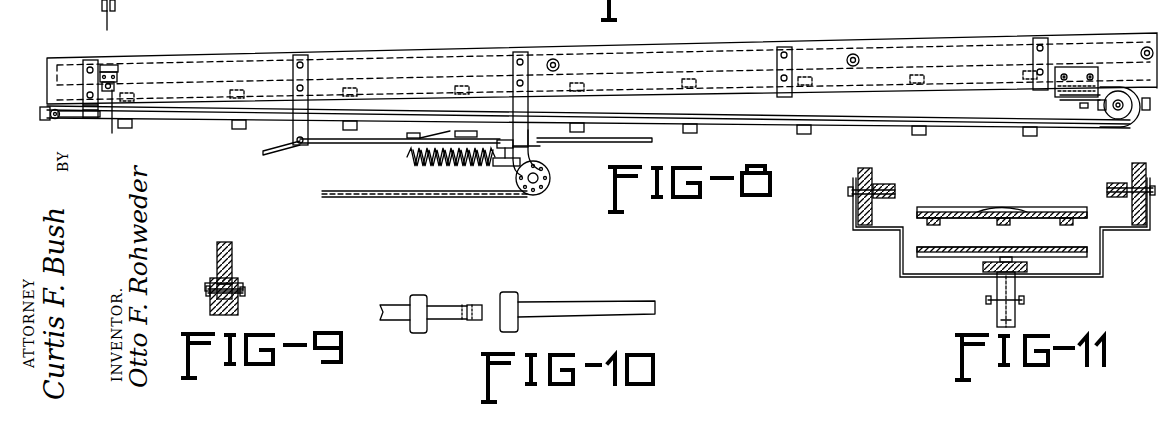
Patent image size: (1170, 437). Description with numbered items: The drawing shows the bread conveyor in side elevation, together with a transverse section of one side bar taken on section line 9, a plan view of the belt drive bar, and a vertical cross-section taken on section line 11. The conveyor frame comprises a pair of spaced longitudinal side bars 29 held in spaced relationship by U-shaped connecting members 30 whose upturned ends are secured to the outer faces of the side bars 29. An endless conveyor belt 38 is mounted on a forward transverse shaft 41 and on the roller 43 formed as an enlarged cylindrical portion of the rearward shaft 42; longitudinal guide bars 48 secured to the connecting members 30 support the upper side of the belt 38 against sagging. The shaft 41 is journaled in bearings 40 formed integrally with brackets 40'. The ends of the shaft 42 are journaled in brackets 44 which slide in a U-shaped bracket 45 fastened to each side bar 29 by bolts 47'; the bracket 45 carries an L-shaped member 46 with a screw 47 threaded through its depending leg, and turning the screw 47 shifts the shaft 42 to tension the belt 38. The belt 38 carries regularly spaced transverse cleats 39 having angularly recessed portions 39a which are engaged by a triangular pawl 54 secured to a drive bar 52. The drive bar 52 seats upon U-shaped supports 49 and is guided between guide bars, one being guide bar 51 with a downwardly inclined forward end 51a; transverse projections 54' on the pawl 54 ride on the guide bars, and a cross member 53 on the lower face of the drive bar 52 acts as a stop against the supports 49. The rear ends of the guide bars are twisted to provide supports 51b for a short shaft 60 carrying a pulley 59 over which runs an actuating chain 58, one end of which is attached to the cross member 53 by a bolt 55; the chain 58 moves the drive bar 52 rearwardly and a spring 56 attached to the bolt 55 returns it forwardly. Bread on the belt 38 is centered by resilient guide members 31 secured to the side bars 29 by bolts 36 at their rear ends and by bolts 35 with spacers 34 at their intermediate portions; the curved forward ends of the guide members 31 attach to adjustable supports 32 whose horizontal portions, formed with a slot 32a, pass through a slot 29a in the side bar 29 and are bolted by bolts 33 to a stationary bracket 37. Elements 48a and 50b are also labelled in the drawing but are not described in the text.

In FIG. 8, the section line 9— 9 is at (1063, 100).
In FIG. 8, the section line 11— 11 is at (554, 227).
In FIG. 8, the side bar 29 is at (382, 70).
In FIG. 9, the side bar 29 is at (232, 250).
In FIG. 11, the side bar 29 is at (872, 172).
In FIG. 8, the slot 29a is at (119, 74).
In FIG. 8, the U-shaped connecting member 30 is at (87, 80).
In FIG. 11, the U-shaped connecting member 30 is at (853, 210).
In FIG. 8, the guide member 31 is at (427, 68).
In FIG. 11, the guide member 31 is at (895, 198).
In FIG. 8, the adjustable support 32 is at (120, 72).
In FIG. 8, the slot 32a is at (120, 15).
In FIG. 8, the bolt 33 is at (110, 66).
In FIG. 11, the spacer 34 is at (890, 187).
In FIG. 8, the bolt 35 is at (560, 66).
In FIG. 8, the bolt 36 is at (1145, 47).
In FIG. 8, the stationary bracket 37 is at (119, 122).
In FIG. 8, the conveyor belt 38 is at (197, 122).
In FIG. 11, the conveyor belt 38 is at (950, 207).
In FIG. 8, the cleat 39 is at (693, 78).
In FIG. 11, the cleat 39 is at (1040, 207).
In FIG. 8, the angularly recessed portion 39a is at (685, 128).
In FIG. 11, the angularly recessed portion 39a is at (995, 207).
In FIG. 8, the journal or bearing 40 is at (43, 138).
In FIG. 8, the bracket 40' is at (79, 133).
In FIG. 8, the forward transverse shaft 41 is at (43, 115).
In FIG. 8, the rearward transverse shaft 42 is at (1145, 110).
In FIG. 8, the roller 43 is at (1127, 119).
In FIG. 8, the bracket 44 is at (1117, 112).
In FIG. 9, the bracket 44 is at (212, 295).
In FIG. 8, the U-shaped bracket 45 is at (1053, 92).
In FIG. 9, the U-shaped bracket 45 is at (238, 288).
In FIG. 8, the L-shaped member 46 is at (1103, 110).
In FIG. 9, the L-shaped member 46 is at (215, 308).
In FIG. 8, the screw 47 is at (1069, 134).
In FIG. 9, the bolt 47' is at (269, 282).
In FIG. 8, the guide bar 48 is at (888, 88).
In FIG. 11, the guide bar 48 is at (932, 225).
In FIG. 8, the plate 48a is at (1073, 78).
In FIG. 8, the U-shaped support 49 is at (297, 133).
In FIG. 11, the U-shaped support 49 is at (1103, 258).
In FIG. 11, the bracket 50b is at (1020, 272).
In FIG. 8, the guide bar 51 is at (325, 143).
In FIG. 8, the inclined forward end 51a is at (264, 156).
In FIG. 8, the support 51b is at (540, 147).
In FIG. 11, the support 51b is at (997, 290).
In FIG. 8, the drive bar 52 is at (610, 143).
In FIG. 10, the drive bar 52 is at (397, 305).
In FIG. 8, the cross member 53 is at (503, 140).
In FIG. 10, the cross member 53 is at (512, 292).
In FIG. 8, the pawl 54 is at (448, 120).
In FIG. 10, the pawl 54 is at (473, 294).
In FIG. 8, the transverse projection 54' is at (412, 120).
In FIG. 10, the transverse projection 54' is at (427, 297).
In FIG. 8, the bolt 55 is at (493, 163).
In FIG. 8, the spring 56 is at (407, 157).
In FIG. 8, the actuating chain 58 is at (437, 197).
In FIG. 11, the actuating chain 58 is at (1012, 322).
In FIG. 8, the pulley 59 is at (516, 177).
In FIG. 11, the pulley 59 is at (997, 318).
In FIG. 8, the shaft 60 is at (542, 178).
In FIG. 11, the shaft 60 is at (1024, 300).